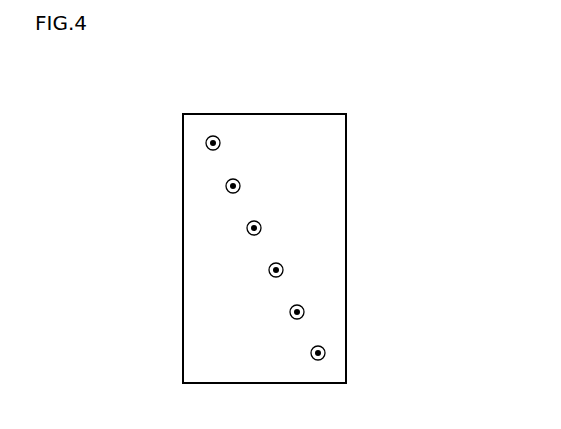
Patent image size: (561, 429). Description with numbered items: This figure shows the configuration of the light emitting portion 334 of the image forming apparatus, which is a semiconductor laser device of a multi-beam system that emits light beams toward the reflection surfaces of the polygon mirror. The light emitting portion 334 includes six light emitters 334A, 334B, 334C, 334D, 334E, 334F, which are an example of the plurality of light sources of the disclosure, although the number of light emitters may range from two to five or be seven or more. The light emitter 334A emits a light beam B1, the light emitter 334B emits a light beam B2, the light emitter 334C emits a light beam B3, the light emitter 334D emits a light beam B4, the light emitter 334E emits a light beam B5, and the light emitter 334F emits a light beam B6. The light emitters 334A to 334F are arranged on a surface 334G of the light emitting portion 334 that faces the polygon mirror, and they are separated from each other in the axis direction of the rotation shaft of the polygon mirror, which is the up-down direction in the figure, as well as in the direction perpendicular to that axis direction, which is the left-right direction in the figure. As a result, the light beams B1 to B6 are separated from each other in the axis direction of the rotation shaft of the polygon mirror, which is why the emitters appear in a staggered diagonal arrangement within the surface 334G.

The light emitting portion 334 is at (178, 92).
The surface 334G is at (315, 137).
The light emitter 334A is at (236, 160).
The light emitter 334B is at (259, 202).
The light emitter 334C is at (280, 244).
The light emitter 334D is at (331, 287).
The light emitter 334E is at (341, 328).
The light emitter 334F is at (334, 363).
The light beam B1 is at (208, 149).
The light beam B2 is at (229, 192).
The light beam B3 is at (250, 234).
The light beam B4 is at (271, 276).
The light beam B5 is at (292, 318).
The light beam B6 is at (311, 357).